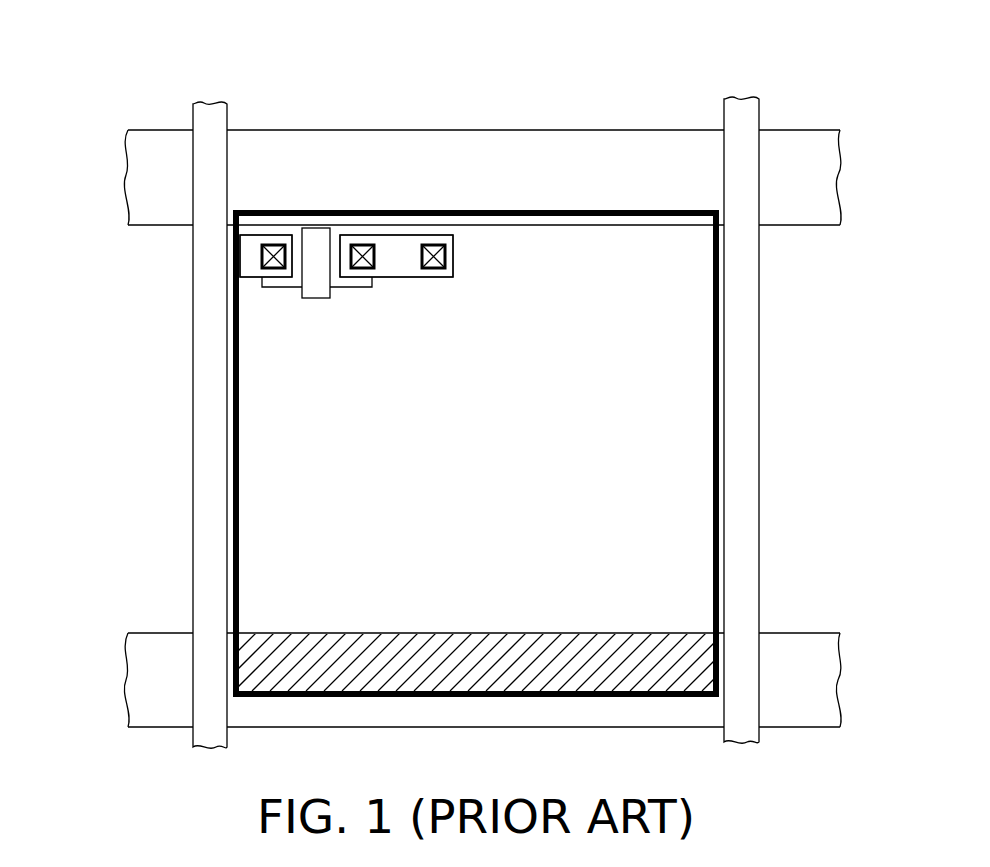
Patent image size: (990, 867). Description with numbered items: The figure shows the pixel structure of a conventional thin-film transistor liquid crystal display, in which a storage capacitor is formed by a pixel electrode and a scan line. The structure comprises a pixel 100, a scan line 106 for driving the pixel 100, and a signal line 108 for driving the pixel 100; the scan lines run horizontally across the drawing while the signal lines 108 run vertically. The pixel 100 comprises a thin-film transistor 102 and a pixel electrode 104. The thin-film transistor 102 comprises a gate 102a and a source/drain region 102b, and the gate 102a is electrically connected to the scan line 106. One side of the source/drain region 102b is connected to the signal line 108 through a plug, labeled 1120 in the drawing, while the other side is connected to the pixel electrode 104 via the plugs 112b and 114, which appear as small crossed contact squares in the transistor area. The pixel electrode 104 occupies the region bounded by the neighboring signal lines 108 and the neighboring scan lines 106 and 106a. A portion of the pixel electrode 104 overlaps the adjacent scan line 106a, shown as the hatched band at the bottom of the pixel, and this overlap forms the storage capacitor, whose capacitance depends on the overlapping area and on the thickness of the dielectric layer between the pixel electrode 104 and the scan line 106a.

The pixel 100 is at (92, 367).
The thin-film transistor 102 is at (288, 209).
The gate 102a is at (322, 228).
The source/drain region 102b is at (458, 60).
The pixel electrode 104 is at (312, 448).
The scan line 106 is at (820, 178).
The adjacent scan line 106a is at (825, 692).
The signal line 108 is at (208, 122).
The plug 112b is at (363, 256).
The plug 114 is at (440, 254).
The source contact 1120 is at (272, 246).